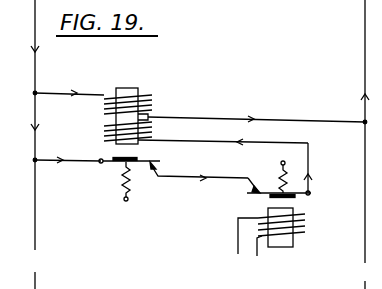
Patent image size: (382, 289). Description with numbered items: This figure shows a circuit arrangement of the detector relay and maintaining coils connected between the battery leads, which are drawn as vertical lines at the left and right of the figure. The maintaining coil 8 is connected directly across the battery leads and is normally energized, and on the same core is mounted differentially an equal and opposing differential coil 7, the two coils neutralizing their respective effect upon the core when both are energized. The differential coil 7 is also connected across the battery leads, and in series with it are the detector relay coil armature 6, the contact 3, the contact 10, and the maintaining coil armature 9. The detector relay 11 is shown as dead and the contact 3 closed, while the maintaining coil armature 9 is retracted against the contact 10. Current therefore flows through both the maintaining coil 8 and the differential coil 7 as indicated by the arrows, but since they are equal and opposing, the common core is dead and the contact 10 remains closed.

The contact 3 is at (272, 174).
The detector relay coil armature 6 is at (316, 203).
The differential coil 7 is at (116, 134).
The coil winding 8 is at (117, 116).
The maintaining coil armature 9 is at (110, 181).
The contact 10 is at (173, 179).
The detector relay 11 is at (286, 232).